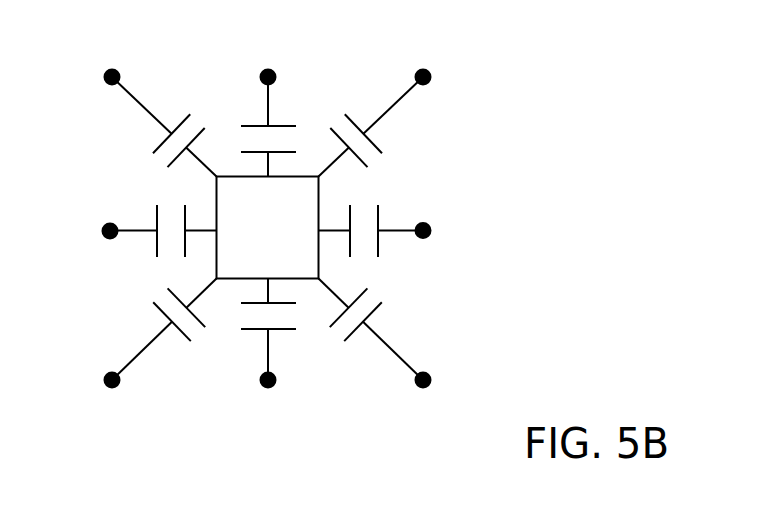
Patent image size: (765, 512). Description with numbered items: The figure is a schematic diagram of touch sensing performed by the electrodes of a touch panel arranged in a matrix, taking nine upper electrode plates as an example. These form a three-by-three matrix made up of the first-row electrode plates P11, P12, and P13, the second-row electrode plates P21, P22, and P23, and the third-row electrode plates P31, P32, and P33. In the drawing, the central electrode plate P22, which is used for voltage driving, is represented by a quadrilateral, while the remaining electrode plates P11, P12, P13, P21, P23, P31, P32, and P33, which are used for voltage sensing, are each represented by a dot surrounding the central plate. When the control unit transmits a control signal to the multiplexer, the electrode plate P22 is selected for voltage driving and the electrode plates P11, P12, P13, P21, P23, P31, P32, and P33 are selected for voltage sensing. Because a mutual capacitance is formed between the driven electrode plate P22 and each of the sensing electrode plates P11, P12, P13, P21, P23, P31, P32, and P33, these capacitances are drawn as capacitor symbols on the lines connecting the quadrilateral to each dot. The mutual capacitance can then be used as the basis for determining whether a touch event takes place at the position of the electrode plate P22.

The first-row electrode plate P11 is at (146, 108).
The first-row electrode plate P12 is at (268, 108).
The first-row electrode plate P13 is at (381, 109).
The second-row electrode plate P21 is at (130, 231).
The electrode plate for voltage driving P22 is at (268, 228).
The second-row electrode plate P23 is at (405, 212).
The third-row electrode plate P31 is at (152, 353).
The third-row electrode plate P32 is at (268, 353).
The third-row electrode plate P33 is at (381, 353).